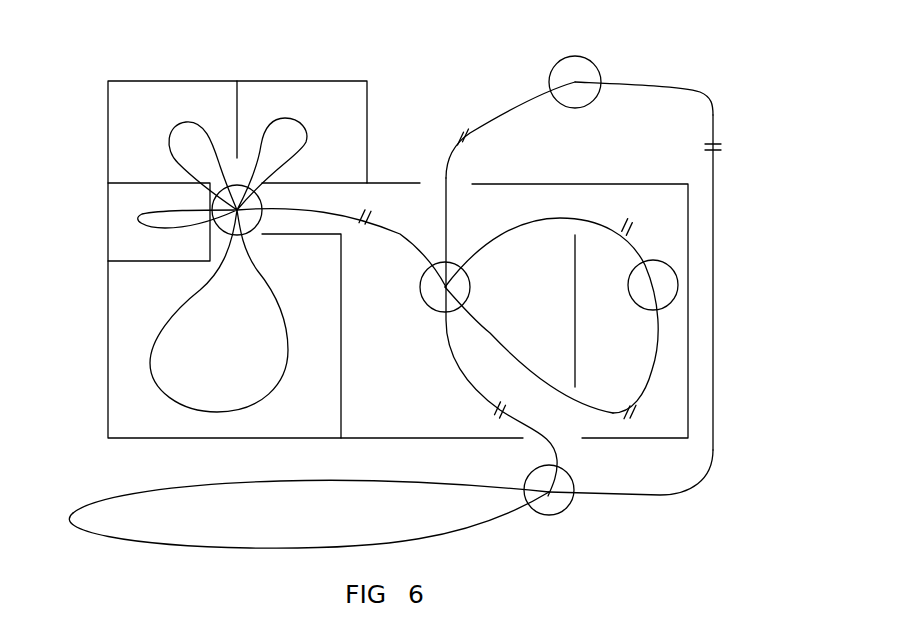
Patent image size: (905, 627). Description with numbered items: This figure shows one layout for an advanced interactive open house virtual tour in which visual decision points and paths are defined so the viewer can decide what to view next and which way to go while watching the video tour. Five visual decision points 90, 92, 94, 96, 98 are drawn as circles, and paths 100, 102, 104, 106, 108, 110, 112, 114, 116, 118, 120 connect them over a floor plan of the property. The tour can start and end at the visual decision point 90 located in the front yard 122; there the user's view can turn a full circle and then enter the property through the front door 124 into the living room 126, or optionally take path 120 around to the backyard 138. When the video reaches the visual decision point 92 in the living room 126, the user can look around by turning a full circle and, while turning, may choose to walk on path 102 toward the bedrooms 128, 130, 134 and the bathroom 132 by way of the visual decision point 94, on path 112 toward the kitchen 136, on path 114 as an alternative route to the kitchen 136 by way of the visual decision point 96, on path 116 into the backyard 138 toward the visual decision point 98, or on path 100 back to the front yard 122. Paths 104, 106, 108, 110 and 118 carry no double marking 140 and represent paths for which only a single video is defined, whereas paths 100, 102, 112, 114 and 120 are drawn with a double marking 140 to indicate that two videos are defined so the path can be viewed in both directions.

The visual decision point 90 is at (553, 66).
The visual decision point 92 is at (424, 303).
The visual decision point 94 is at (263, 204).
The visual decision point 96 is at (630, 301).
The visual decision point 98 is at (562, 517).
The path 100 is at (517, 104).
The path 102 is at (403, 238).
The path 104 is at (311, 133).
The path 106 is at (178, 133).
The path 108 is at (183, 236).
The path 110 is at (172, 307).
The path 112 is at (517, 222).
The path 114 is at (492, 335).
The path 116 is at (470, 393).
The path 118 is at (289, 483).
The path 120 is at (693, 493).
The front yard 122 is at (638, 65).
The front door 124 is at (454, 187).
The living room 126 is at (372, 427).
The bedroom 128 is at (258, 108).
The bedroom 130 is at (186, 107).
The bathroom 132 is at (135, 203).
The bedroom 134 is at (135, 393).
The kitchen 136 is at (665, 340).
The backyard 138 is at (483, 552).
The double marking 140 is at (727, 143).